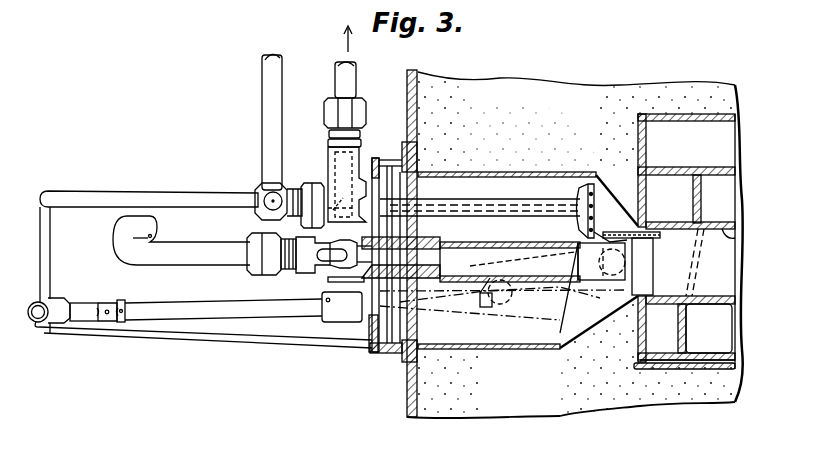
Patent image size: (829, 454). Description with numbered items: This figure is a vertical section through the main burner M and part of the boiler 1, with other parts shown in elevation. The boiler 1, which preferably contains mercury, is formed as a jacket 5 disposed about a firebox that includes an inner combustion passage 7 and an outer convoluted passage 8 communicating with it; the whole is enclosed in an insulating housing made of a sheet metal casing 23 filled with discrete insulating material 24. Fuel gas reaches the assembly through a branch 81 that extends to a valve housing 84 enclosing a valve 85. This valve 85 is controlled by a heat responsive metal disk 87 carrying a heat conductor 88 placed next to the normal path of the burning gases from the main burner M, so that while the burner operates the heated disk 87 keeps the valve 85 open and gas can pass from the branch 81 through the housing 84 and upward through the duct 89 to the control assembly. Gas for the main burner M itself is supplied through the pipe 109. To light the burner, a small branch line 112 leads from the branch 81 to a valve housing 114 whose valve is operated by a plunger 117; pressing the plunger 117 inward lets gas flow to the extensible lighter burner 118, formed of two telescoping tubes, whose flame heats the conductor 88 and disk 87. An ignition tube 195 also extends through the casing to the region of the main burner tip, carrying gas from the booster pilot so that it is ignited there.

The boiler 1 is at (638, 131).
The jacket 5 is at (687, 376).
The inner combustion passage 7 is at (735, 236).
The outer convoluted passage 8 is at (722, 328).
The sheet metal casing 23 is at (403, 396).
The discrete insulating material 24 is at (575, 245).
The branch 81 is at (262, 104).
The valve housing 84 is at (360, 160).
The valve 85 is at (340, 195).
The heat responsive metal disk 87 is at (583, 202).
The heat conductor 88 is at (631, 263).
The duct 89 is at (338, 80).
The pipe 109 is at (172, 250).
The branch line 112 is at (104, 196).
The valve housing 114 is at (60, 302).
The plunger 117 is at (35, 328).
The lighter burner 118 is at (210, 296).
The ignition tube 195 is at (546, 262).
The main burner M is at (385, 361).